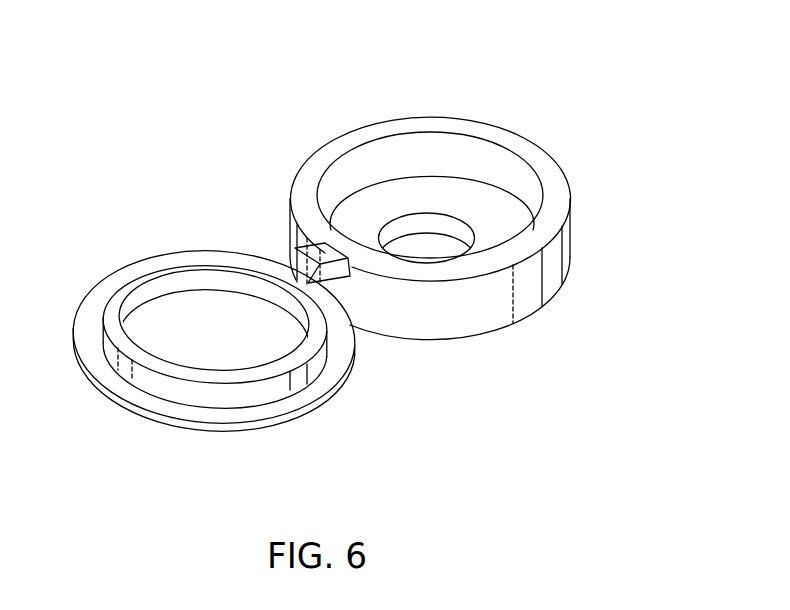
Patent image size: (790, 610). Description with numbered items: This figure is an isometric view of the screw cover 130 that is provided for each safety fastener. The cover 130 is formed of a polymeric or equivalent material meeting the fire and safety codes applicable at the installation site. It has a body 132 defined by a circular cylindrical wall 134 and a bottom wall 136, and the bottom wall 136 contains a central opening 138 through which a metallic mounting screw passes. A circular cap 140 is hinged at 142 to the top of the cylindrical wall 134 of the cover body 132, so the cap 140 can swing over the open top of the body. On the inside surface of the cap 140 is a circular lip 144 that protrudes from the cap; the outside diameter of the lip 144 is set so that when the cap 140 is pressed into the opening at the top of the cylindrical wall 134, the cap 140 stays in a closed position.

The screw cover 130 is at (434, 248).
The body 132 is at (552, 265).
The circular cylindrical wall 134 is at (558, 191).
The bottom wall 136 is at (493, 203).
The central opening 138 is at (428, 223).
The circular cap 140 is at (214, 342).
The hinge 142 is at (290, 258).
The circular lip 144 is at (153, 268).